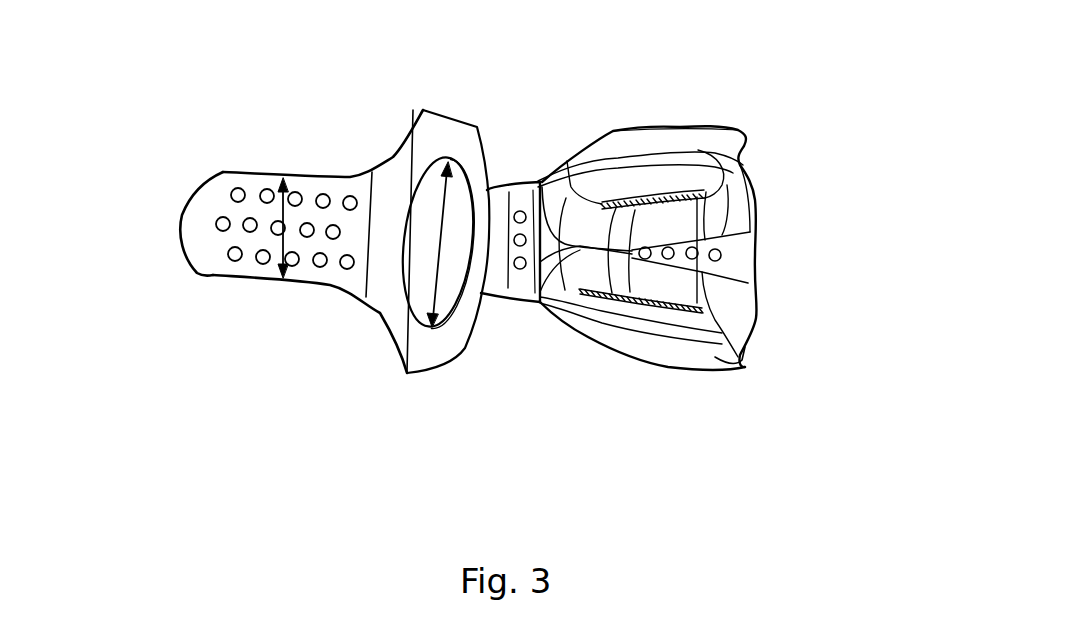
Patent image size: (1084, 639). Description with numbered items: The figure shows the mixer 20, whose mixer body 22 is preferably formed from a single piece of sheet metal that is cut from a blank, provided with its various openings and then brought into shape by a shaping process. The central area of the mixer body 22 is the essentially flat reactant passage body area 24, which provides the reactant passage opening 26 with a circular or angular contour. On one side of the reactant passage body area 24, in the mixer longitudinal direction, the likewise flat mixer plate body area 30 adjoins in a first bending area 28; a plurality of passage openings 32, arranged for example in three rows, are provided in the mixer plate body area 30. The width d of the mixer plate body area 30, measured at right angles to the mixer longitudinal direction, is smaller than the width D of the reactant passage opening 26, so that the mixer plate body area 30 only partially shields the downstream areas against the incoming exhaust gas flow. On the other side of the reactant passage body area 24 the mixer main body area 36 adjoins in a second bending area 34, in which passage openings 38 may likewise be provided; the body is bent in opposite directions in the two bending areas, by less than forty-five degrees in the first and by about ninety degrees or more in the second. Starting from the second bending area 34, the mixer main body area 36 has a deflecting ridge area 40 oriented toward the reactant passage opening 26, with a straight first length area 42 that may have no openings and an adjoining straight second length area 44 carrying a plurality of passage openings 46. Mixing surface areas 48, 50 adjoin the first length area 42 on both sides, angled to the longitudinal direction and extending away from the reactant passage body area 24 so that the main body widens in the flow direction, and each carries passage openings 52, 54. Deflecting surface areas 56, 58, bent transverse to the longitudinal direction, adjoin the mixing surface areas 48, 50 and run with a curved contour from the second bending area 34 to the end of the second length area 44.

The mixer 20 is at (148, 96).
The mixer body 22 is at (347, 293).
The reactant passage body area 24 is at (452, 128).
The reactant passage opening 26 is at (450, 297).
The first bending area 28 is at (383, 157).
The mixer plate body area 30 is at (197, 248).
The passage openings 32 is at (238, 189).
The second bending area 34 is at (503, 170).
The mixer main body area 36 is at (757, 193).
The passage openings 38 is at (518, 268).
The deflecting ridge area 40 is at (590, 223).
The first length area 42 is at (583, 200).
The second length area 44 is at (738, 258).
The passage openings 46 is at (717, 260).
The mixing surface area 48 is at (666, 197).
The mixing surface area 50 is at (645, 305).
The passage openings 52 is at (706, 191).
The passage openings 54 is at (678, 310).
The deflecting surface area 56 is at (683, 140).
The deflecting surface area 58 is at (742, 369).
The width of the mixer plate body area d is at (273, 249).
The width of the reactant passage opening D is at (420, 290).